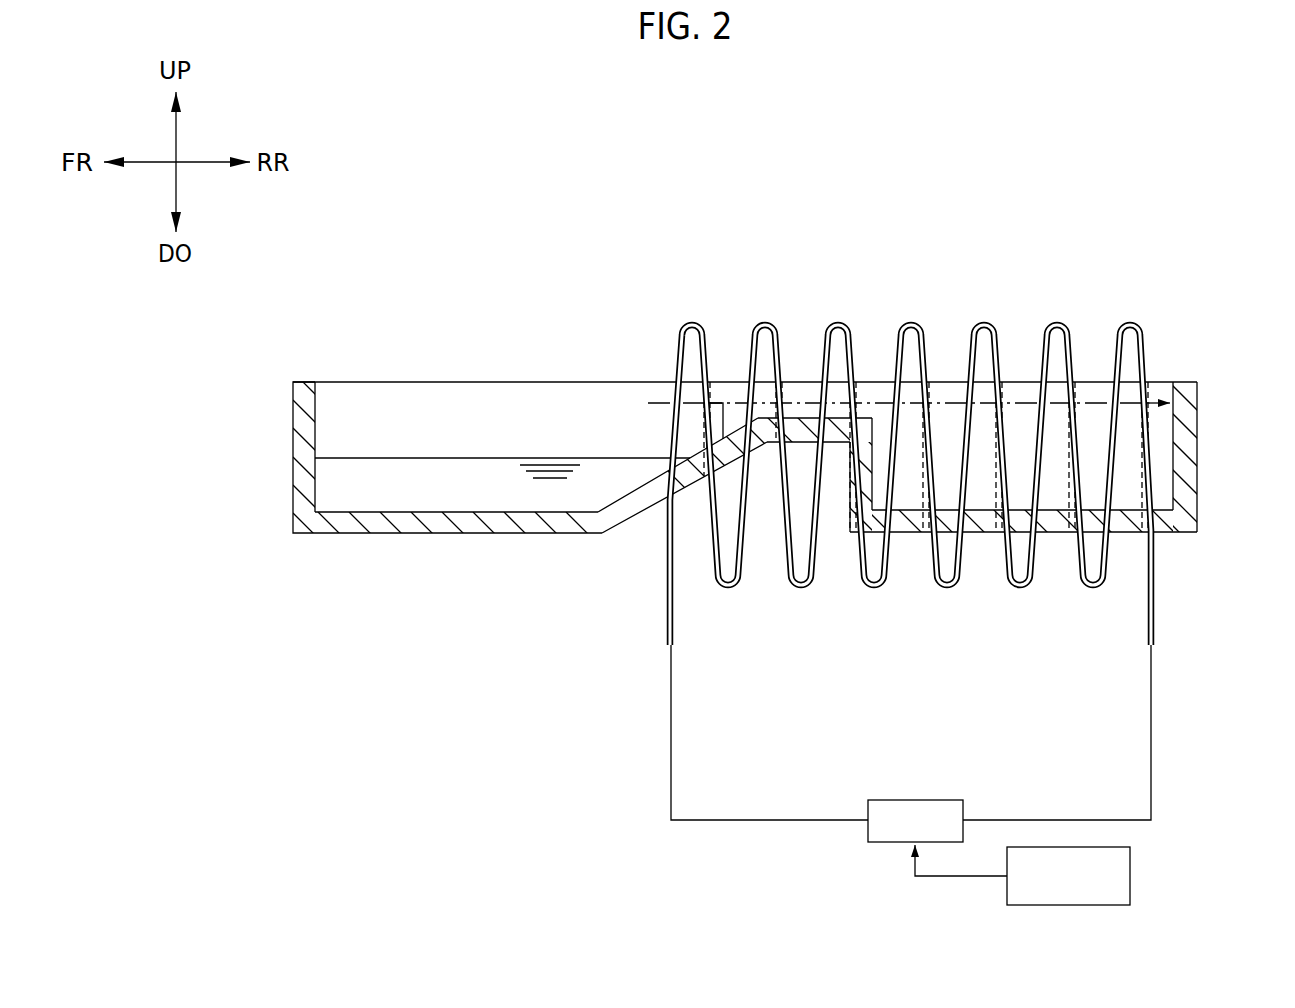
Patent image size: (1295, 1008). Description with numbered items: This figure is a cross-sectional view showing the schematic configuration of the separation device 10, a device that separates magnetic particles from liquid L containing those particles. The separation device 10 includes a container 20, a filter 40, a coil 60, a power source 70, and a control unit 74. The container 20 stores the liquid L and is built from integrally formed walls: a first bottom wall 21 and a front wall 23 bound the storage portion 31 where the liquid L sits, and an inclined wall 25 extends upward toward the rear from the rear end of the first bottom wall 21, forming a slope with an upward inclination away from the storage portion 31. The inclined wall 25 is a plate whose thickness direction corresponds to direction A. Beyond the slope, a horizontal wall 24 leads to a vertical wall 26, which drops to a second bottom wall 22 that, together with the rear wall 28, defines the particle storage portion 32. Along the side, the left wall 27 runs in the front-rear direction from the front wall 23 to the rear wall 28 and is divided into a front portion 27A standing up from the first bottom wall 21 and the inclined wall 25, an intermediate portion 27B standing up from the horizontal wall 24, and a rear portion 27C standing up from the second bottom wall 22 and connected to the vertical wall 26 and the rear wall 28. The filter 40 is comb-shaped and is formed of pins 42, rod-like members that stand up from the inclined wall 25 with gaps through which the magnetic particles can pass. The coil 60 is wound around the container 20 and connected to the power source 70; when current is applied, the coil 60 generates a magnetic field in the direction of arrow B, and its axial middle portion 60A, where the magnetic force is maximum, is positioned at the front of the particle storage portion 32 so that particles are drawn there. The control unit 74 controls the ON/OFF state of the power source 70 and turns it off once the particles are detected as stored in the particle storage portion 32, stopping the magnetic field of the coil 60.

The separation device 10 is at (1180, 175).
The container 20 is at (303, 355).
The first bottom wall 21 is at (442, 528).
The second bottom wall 22 is at (1060, 525).
The front wall 23 is at (300, 440).
The horizontal wall 24 is at (797, 416).
The inclined wall 25 is at (695, 522).
The vertical wall 26 is at (848, 482).
The left wall 27 is at (472, 380).
The front portion 27A is at (518, 402).
The intermediate portion 27B is at (862, 398).
The rear portion 27C is at (1095, 390).
The rear wall 28 is at (1183, 452).
The storage portion 31 is at (383, 406).
The particle storage portion 32 is at (1152, 392).
The filter 40 is at (716, 400).
The pins 42 is at (728, 422).
The coil 60 is at (990, 325).
The middle portion 60A is at (898, 475).
The power source 70 is at (887, 835).
The control unit 74 is at (1122, 878).
The liquid L is at (428, 463).
The direction A is at (637, 483).
The arrow B is at (655, 402).